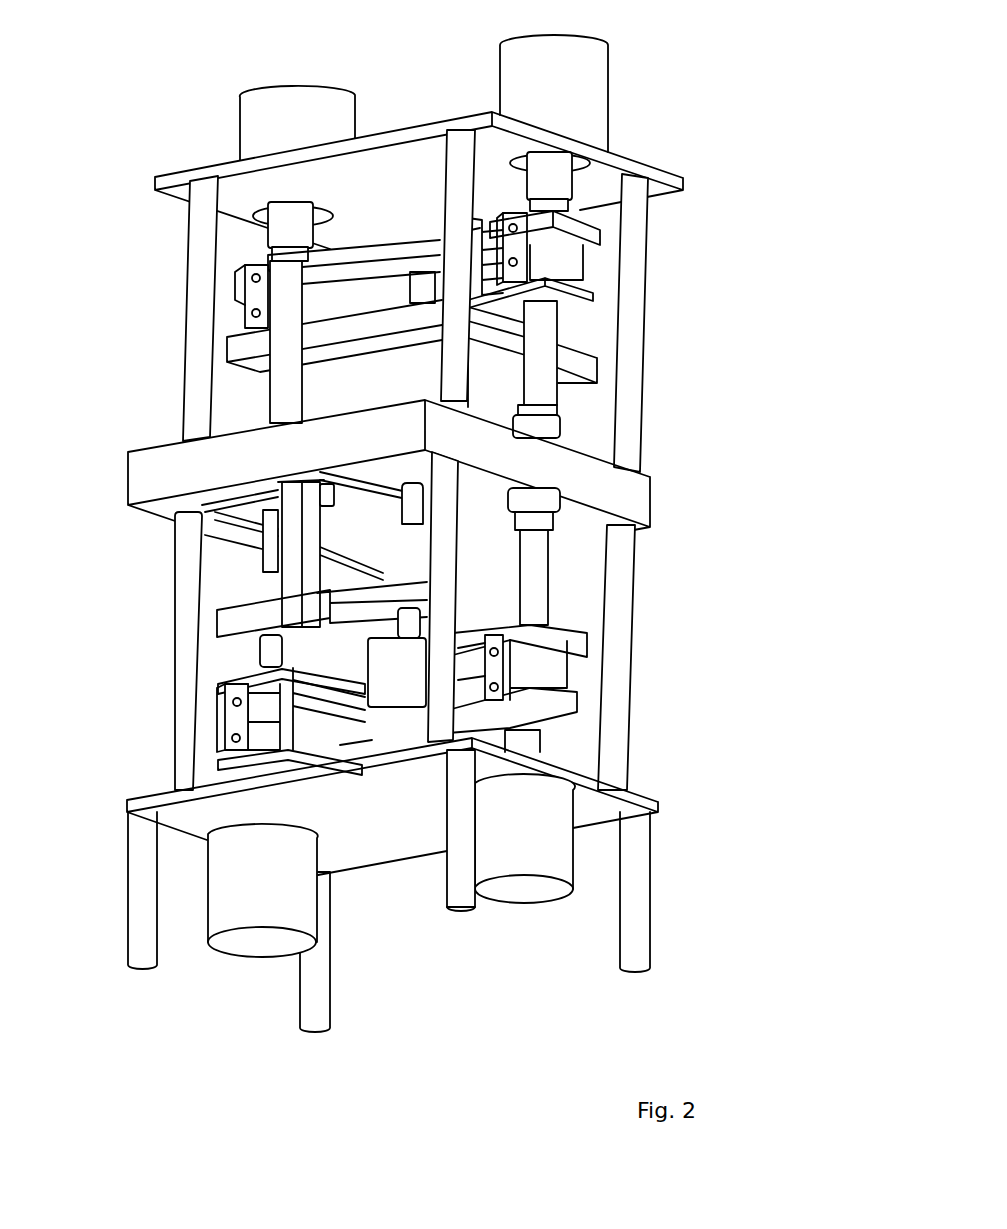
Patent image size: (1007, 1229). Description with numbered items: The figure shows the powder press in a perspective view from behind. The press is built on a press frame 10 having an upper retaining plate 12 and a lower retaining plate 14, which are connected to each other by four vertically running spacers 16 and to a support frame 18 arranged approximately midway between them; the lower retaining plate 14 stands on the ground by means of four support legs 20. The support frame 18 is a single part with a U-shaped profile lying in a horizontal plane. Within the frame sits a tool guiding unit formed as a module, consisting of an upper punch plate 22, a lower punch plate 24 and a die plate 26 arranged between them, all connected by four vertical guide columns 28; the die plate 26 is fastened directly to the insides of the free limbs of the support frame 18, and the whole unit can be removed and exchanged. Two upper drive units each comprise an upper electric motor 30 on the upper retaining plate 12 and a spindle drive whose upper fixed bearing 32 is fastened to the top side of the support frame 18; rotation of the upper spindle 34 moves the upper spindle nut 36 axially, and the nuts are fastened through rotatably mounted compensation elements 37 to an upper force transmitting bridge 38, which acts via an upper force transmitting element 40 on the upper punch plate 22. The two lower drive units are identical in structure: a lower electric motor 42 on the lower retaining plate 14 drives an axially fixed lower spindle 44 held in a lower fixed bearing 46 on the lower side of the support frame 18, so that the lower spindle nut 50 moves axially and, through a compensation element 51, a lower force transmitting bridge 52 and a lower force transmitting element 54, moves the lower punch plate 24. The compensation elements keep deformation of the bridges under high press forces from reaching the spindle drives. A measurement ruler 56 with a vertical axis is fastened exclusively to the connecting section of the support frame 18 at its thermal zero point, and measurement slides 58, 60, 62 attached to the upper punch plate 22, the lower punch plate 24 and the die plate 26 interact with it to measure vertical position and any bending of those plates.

The press frame 10 is at (740, 410).
The upper retaining plate 12 is at (405, 140).
The lower retaining plate 14 is at (388, 850).
The spacer 16 is at (635, 320).
The support frame 18 is at (147, 482).
The support leg 20 is at (640, 905).
The upper punch plate 22 is at (590, 372).
The lower punch plate 24 is at (587, 643).
The die plate 26 is at (560, 530).
The guide column 28 is at (268, 577).
The upper electric motor 30 is at (257, 107).
The upper fixed bearing 32 is at (553, 432).
The upper spindle 34 is at (543, 390).
The upper spindle nut 36 is at (565, 265).
The compensation element 37 is at (235, 297).
The upper force transmitting bridge 38 is at (358, 260).
The upper force transmitting element 40 is at (400, 258).
The lower electric motor 42 is at (243, 907).
The lower spindle 44 is at (533, 575).
The lower fixed bearing 46 is at (547, 502).
The lower spindle nut 50 is at (260, 703).
The compensation element 51 is at (233, 720).
The lower force transmitting bridge 52 is at (355, 745).
The lower force transmitting element 54 is at (400, 688).
The measurement ruler 56 is at (297, 388).
The measurement slide 58 is at (260, 640).
The measurement slide 60 is at (320, 507).
The measurement slide 62 is at (333, 328).